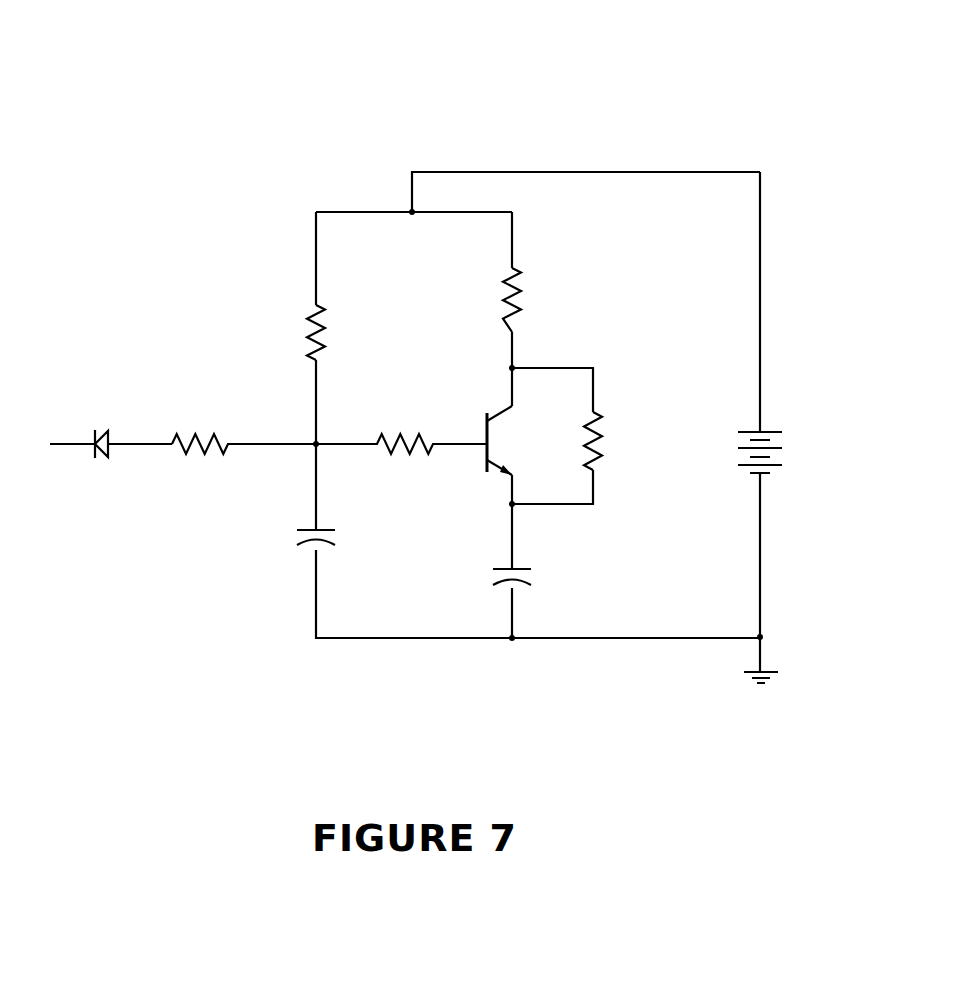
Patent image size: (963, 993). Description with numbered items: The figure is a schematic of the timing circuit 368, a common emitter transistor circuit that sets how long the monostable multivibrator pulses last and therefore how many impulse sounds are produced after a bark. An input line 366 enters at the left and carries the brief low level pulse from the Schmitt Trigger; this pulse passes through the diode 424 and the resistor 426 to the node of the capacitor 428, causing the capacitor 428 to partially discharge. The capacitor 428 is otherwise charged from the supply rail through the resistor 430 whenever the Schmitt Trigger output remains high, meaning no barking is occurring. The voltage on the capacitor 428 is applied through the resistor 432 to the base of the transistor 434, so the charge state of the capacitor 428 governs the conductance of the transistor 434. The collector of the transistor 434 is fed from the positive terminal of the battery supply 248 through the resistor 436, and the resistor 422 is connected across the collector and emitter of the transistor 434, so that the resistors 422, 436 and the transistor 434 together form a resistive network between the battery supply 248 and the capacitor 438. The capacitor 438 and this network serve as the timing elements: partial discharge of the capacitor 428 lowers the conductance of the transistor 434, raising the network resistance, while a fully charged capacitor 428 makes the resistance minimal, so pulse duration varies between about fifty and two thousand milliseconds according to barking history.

The timing circuit 368 is at (168, 84).
The input signal line 366 is at (50, 448).
The diode 424 is at (107, 432).
The resistor 426 is at (209, 440).
The resistor 430 is at (316, 312).
The capacitor 428 is at (302, 524).
The resistor 432 is at (399, 450).
The transistor 434 is at (486, 424).
The resistor 436 is at (514, 296).
The resistor 422 is at (596, 436).
The capacitor 438 is at (526, 566).
The battery supply 248 is at (780, 436).